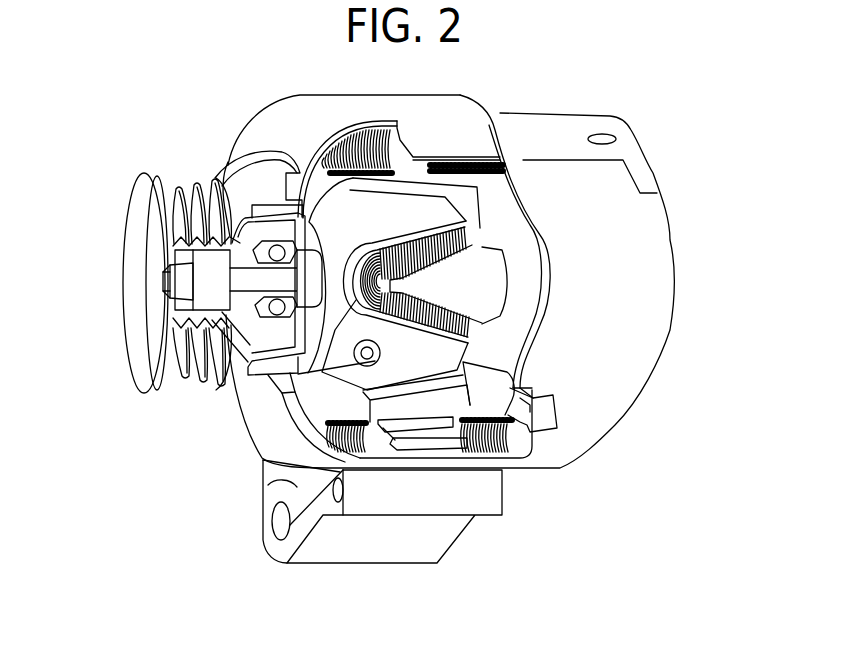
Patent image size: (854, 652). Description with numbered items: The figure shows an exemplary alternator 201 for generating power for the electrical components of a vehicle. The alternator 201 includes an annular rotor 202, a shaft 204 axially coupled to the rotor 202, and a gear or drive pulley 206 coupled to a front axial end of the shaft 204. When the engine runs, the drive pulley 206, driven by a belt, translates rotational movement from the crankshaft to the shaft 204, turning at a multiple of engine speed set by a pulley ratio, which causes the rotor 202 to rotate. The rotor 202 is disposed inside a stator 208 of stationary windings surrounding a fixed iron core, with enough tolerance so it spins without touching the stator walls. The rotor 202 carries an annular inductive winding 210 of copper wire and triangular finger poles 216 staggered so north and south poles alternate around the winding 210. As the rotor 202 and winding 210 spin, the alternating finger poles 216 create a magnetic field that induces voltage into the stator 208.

The alternator 201 is at (560, 93).
The rotor 202 is at (393, 211).
The shaft 204 is at (235, 380).
The drive pulley 206 is at (178, 188).
The stator 208 is at (509, 441).
The inductive winding 210 is at (472, 228).
The finger poles 216 is at (486, 286).